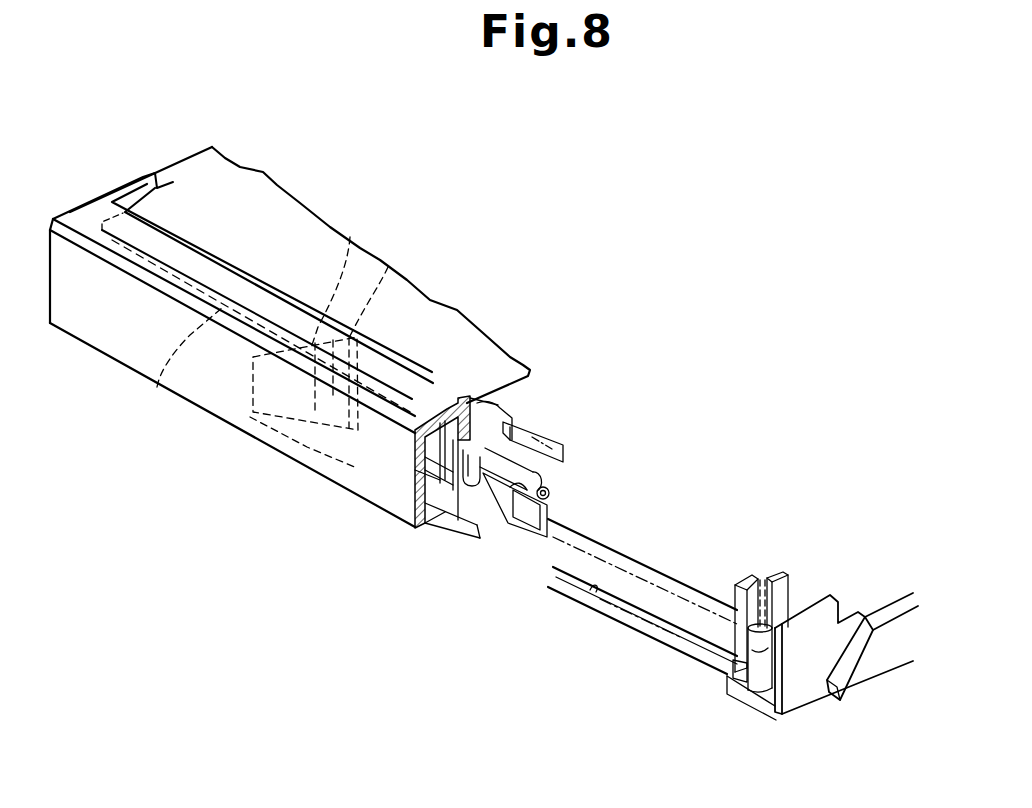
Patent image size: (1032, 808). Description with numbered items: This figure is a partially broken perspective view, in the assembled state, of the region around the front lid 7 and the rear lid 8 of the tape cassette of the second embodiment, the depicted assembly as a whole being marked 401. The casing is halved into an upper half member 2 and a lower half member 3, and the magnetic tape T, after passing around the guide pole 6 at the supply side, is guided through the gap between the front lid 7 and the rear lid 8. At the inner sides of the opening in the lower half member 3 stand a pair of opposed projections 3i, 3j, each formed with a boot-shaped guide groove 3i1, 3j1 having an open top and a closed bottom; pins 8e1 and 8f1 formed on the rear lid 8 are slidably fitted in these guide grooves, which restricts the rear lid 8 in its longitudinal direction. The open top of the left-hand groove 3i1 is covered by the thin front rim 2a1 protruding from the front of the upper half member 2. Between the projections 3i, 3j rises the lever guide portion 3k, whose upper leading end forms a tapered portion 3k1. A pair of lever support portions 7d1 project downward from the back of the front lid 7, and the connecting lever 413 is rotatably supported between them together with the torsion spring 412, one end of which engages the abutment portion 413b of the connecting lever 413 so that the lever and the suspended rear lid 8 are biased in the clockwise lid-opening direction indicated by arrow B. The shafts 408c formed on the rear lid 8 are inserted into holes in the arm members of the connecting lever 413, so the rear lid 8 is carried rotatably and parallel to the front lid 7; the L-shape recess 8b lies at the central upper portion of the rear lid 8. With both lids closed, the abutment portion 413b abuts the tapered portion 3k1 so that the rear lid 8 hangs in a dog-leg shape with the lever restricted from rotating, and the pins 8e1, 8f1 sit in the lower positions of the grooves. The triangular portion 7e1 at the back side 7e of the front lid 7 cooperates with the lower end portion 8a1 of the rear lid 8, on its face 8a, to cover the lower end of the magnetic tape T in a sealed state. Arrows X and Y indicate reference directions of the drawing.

The upper half member 2 is at (277, 187).
The front rim 2a1 is at (158, 390).
The lower half member 3 is at (807, 707).
The projection 3i is at (352, 237).
The guide groove 3i1 is at (388, 267).
The projection 3j is at (787, 578).
The guide groove 3j1 is at (762, 583).
The lever guide portion 3k is at (567, 452).
The tapered portion 3k1 is at (510, 423).
The guide pole 6 is at (762, 688).
The front lid 7 is at (143, 341).
The lever support portion 7d1 is at (443, 398).
The back side 7e is at (420, 480).
The triangular portion 7e1 is at (436, 530).
The rear lid 8 is at (690, 567).
The arm side face 8a is at (633, 560).
The lower end portion 8a1 is at (647, 633).
The L-shape recess 8b is at (433, 513).
The pin 8e1 is at (325, 500).
The pin 8f1 is at (735, 663).
The assembly 401 is at (762, 239).
The shaft 408c is at (548, 515).
The torsion spring 412 is at (468, 400).
The connecting lever 413 is at (336, 528).
The abutment portion 413b is at (500, 407).
The magnetic tape T is at (595, 585).
The X direction X is at (613, 360).
The Y direction Y is at (469, 675).
The direction of arrow B is at (588, 495).